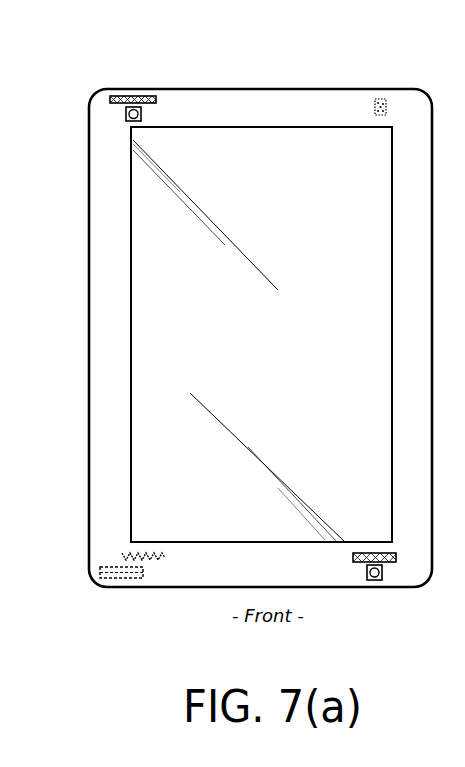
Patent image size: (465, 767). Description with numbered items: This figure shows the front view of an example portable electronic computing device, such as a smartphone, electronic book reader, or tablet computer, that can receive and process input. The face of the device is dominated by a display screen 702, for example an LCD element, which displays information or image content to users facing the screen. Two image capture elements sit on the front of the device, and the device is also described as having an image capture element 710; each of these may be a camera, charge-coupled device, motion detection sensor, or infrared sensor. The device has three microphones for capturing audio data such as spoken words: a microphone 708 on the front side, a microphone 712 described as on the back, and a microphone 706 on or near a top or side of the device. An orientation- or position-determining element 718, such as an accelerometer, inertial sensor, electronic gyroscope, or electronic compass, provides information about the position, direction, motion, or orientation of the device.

The display screen 702 is at (130, 248).
The microphone 706 is at (147, 95).
The microphone 708 is at (388, 563).
The image capture element 710 is at (383, 98).
The microphone 712 is at (145, 560).
The orientation- or position-determining element 718 is at (117, 578).